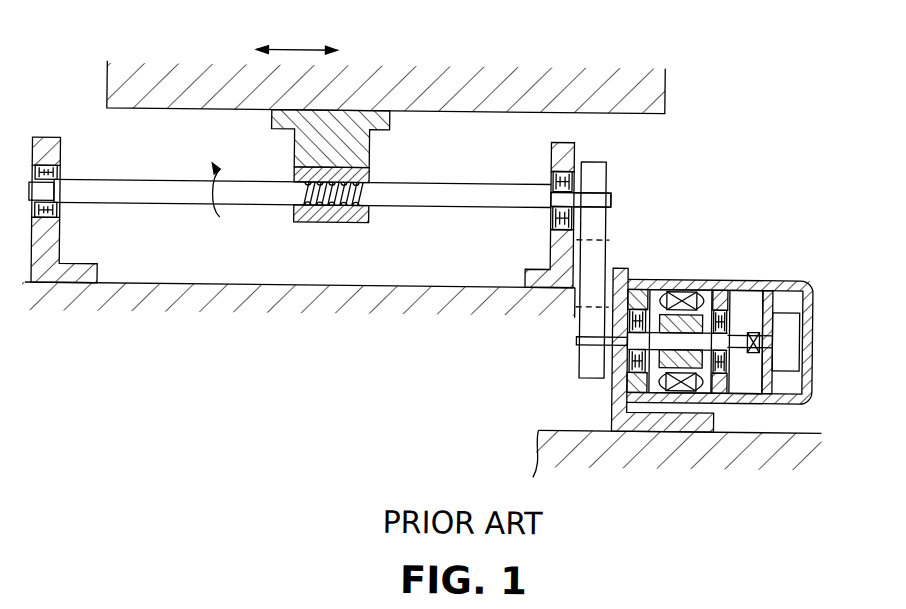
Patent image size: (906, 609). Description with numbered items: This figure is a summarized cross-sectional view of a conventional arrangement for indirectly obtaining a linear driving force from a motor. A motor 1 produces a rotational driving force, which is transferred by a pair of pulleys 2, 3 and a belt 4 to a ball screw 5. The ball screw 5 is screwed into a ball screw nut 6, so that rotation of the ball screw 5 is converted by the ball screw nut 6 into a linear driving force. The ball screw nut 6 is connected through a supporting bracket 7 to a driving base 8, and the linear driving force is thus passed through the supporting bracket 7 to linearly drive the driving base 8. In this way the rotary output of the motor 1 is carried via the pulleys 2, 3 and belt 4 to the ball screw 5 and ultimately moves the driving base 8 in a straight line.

The motor 1 is at (718, 272).
The pulley 2 is at (580, 322).
The pulley 3 is at (605, 163).
The belt 4 is at (607, 247).
The ball screw 5 is at (409, 179).
The ball screw nut 6 is at (362, 219).
The supporting bracket 7 is at (401, 111).
The driving base 8 is at (664, 92).